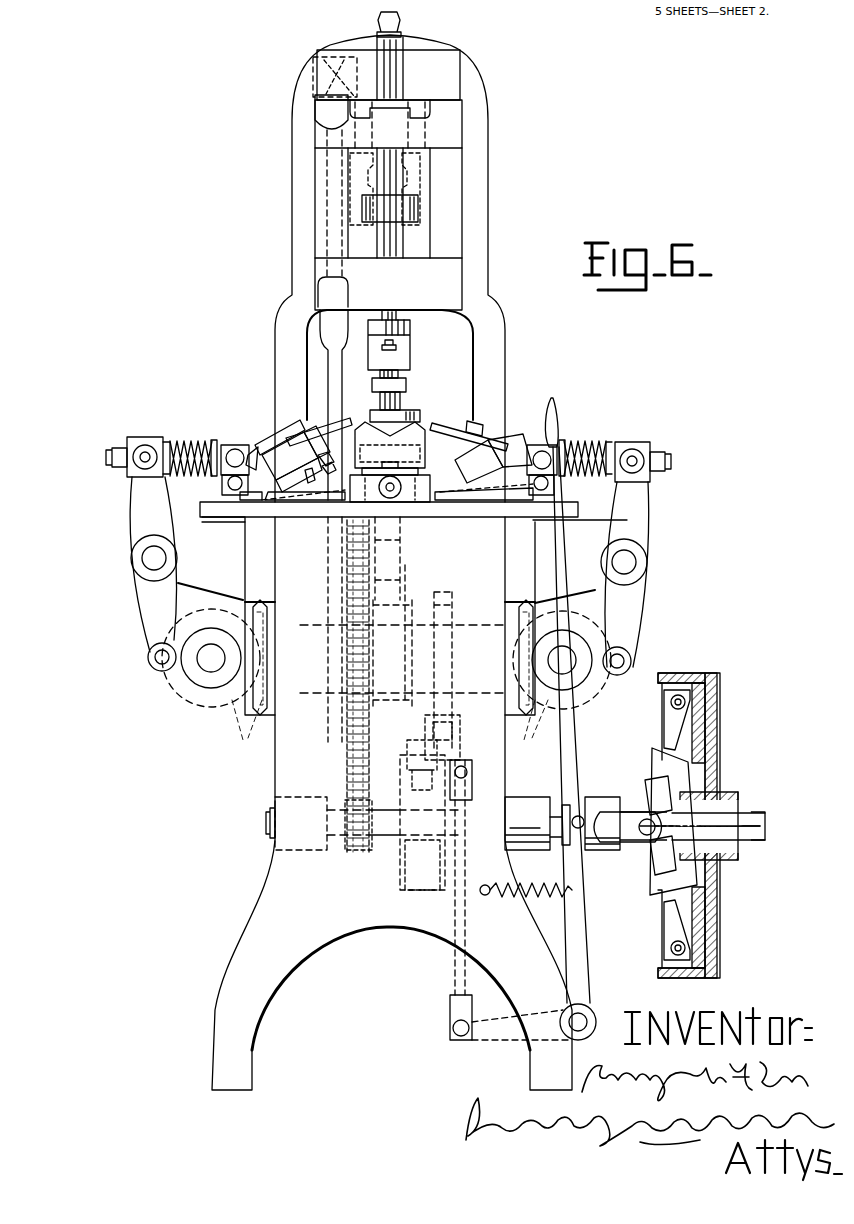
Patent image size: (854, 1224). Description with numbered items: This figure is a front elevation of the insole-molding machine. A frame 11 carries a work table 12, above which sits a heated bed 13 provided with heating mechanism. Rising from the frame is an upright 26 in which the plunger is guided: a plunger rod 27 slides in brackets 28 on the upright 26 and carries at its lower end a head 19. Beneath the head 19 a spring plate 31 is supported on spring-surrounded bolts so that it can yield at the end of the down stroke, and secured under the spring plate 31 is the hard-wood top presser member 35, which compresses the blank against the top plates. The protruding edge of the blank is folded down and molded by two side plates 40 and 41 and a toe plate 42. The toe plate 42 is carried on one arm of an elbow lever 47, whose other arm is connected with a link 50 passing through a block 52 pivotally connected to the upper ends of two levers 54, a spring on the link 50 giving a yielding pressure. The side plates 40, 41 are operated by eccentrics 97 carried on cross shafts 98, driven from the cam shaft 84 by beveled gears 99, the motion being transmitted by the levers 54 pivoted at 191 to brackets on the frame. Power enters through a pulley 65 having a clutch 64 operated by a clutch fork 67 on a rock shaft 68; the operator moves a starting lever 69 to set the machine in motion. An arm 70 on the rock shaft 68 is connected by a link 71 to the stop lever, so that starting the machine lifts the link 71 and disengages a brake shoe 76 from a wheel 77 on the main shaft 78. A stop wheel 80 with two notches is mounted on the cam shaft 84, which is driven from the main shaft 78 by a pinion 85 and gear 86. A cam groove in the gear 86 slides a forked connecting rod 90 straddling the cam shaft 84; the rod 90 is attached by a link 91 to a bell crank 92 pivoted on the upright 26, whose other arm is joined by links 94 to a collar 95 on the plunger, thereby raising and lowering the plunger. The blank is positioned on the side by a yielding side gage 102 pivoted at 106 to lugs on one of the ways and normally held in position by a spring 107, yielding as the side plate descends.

The frame 11 is at (228, 963).
The work table 12 is at (580, 508).
The heated bed 13 is at (420, 495).
The head 19 is at (403, 358).
The upright 26 is at (299, 270).
The plunger rod 27 is at (402, 70).
The brackets 28 is at (452, 132).
The spring plate 31 is at (407, 382).
The top presser member 35 is at (416, 415).
The side plate 40 is at (455, 450).
The side plate 41 is at (330, 430).
The toe plate 42 is at (378, 430).
The elbow lever 47 is at (230, 445).
The link 50 is at (190, 441).
The block 52 is at (135, 437).
The levers 54 is at (140, 510).
The clutch 64 is at (672, 683).
The pulley 65 is at (717, 672).
The clutch fork 67 is at (572, 848).
The rock shaft 68 is at (582, 1016).
The starting lever 69 is at (556, 425).
The arm 70 is at (470, 1040).
The link 71 is at (455, 973).
The brake shoe 76 is at (402, 858).
The wheel 77 is at (430, 888).
The main shaft 78 is at (270, 820).
The stop wheel 80 is at (445, 598).
The cam shaft 84 is at (212, 698).
The pinion 85 is at (348, 852).
The gear 86 is at (346, 766).
The connecting rod 90 is at (332, 362).
The link 91 is at (320, 186).
The bell crank 92 is at (318, 106).
The links 94 is at (420, 200).
The collar 95 is at (390, 208).
The eccentrics 97 is at (211, 688).
The cross shafts 98 is at (205, 660).
The beveled gears 99 is at (385, 738).
The side gage 102 is at (292, 440).
The pivot 106 is at (326, 466).
The spring 107 is at (312, 484).
The pivot 191 is at (150, 558).